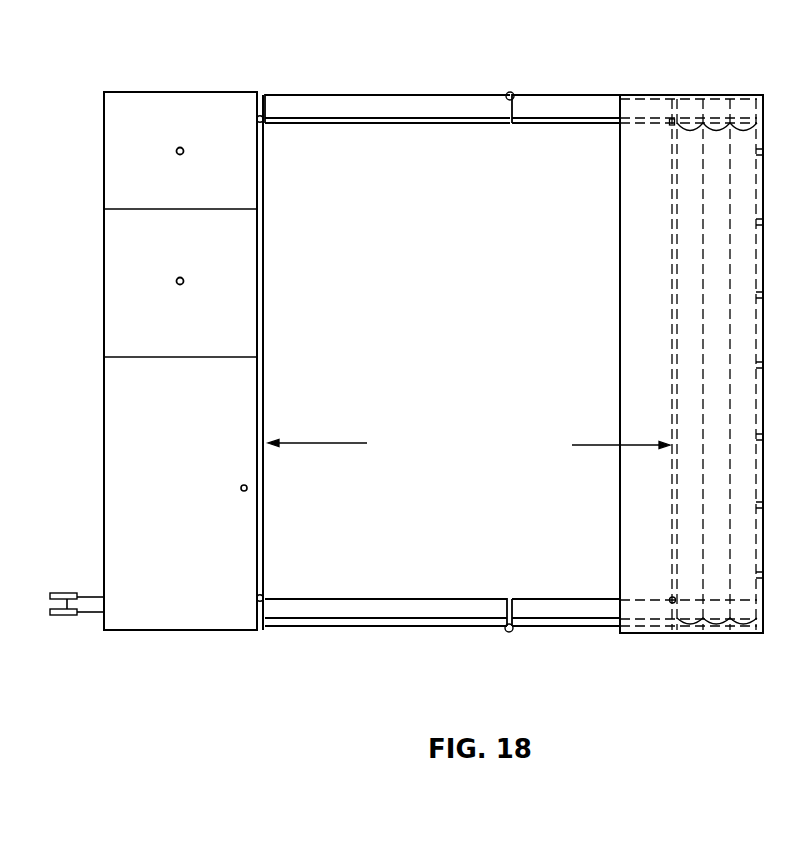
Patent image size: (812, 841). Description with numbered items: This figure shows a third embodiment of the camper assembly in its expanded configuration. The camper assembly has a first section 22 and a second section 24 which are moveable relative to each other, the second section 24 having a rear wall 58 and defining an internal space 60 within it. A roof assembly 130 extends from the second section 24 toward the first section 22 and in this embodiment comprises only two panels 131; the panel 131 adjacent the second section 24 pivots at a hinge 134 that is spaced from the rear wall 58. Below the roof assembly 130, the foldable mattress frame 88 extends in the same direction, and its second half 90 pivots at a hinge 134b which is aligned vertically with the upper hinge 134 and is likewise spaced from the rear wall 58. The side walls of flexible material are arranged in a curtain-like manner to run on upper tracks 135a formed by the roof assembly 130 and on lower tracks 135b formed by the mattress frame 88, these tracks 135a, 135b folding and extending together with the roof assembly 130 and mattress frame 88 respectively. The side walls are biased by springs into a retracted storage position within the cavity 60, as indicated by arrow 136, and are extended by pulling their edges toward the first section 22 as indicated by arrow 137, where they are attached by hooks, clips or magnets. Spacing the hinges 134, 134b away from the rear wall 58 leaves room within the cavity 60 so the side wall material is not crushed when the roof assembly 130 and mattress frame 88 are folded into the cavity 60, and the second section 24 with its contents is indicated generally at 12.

The rotary drum 12 is at (715, 450).
The first section 22 is at (125, 473).
The second section 24 is at (786, 364).
The rear wall 58 is at (763, 277).
The internal space 60 is at (434, 383).
The mattress frame 88 is at (386, 648).
The second half 90 is at (562, 610).
The roof assembly 130 is at (491, 317).
The panels 131 is at (320, 104).
The upper pin 134 is at (672, 110).
The hinge 134b is at (603, 577).
The upper tracks 135a is at (507, 147).
The lower tracks 135b is at (480, 660).
The arrow 136 is at (588, 447).
The arrow 137 is at (327, 445).